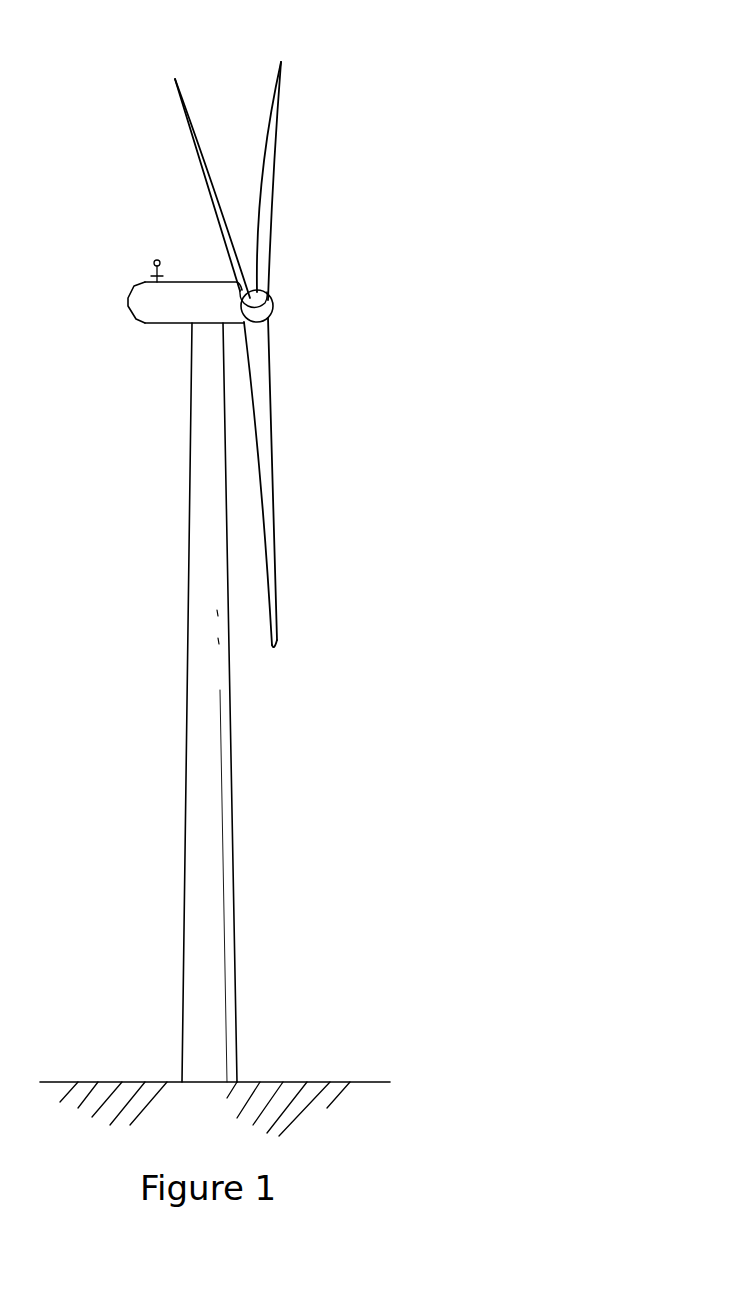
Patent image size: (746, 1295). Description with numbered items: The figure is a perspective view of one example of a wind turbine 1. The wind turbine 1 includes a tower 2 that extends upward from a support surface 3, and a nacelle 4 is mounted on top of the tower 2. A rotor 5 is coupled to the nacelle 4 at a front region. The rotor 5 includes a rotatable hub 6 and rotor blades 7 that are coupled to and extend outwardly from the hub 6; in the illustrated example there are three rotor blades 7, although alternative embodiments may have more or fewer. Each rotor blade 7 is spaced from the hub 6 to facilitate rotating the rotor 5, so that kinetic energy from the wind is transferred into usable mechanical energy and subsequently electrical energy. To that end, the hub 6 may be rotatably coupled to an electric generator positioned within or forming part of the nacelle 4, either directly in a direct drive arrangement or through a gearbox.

The wind turbine 1 is at (388, 132).
The tower 2 is at (197, 808).
The support surface 3 is at (117, 1082).
The nacelle 4 is at (170, 325).
The rotor 5 is at (283, 278).
The hub 6 is at (276, 307).
The rotor blade 7 is at (270, 100).